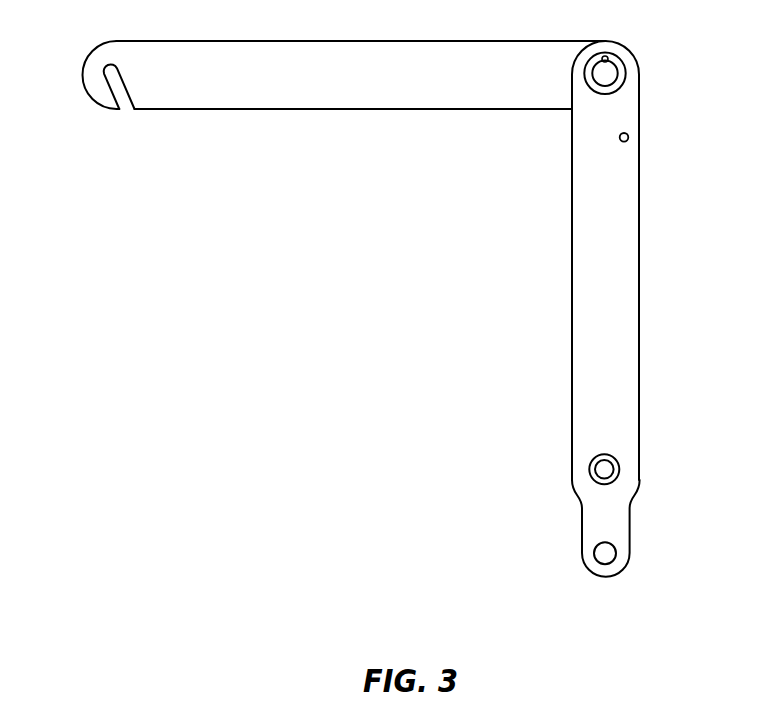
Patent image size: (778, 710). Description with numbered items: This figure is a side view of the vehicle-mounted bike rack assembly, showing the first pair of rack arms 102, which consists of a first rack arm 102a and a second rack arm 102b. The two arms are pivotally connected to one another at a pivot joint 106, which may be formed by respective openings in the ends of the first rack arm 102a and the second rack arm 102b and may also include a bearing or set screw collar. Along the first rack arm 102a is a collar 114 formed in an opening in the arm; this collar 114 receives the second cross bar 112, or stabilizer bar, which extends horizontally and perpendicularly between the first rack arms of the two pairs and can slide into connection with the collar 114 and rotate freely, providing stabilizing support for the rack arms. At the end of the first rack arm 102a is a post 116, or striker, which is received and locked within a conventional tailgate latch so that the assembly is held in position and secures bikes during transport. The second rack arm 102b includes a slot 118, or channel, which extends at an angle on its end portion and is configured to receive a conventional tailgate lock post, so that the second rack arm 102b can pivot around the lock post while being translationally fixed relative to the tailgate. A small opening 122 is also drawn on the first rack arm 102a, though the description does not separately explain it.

The first pair of rack arms 102 is at (384, 296).
The first rack arm 102a is at (615, 296).
The second rack arm 102b is at (312, 116).
The pivot joint 106 is at (625, 70).
The second cross bar 112 is at (597, 470).
The collars 114 is at (618, 460).
The post 116 is at (607, 553).
The slot 118 is at (113, 83).
The small pin hole 122 is at (630, 137).